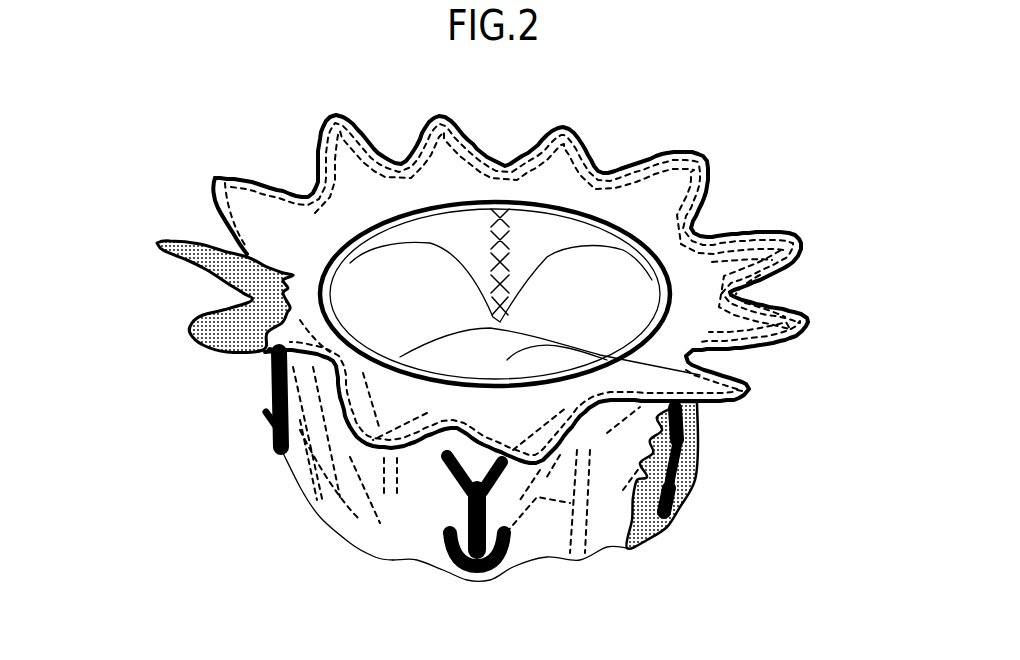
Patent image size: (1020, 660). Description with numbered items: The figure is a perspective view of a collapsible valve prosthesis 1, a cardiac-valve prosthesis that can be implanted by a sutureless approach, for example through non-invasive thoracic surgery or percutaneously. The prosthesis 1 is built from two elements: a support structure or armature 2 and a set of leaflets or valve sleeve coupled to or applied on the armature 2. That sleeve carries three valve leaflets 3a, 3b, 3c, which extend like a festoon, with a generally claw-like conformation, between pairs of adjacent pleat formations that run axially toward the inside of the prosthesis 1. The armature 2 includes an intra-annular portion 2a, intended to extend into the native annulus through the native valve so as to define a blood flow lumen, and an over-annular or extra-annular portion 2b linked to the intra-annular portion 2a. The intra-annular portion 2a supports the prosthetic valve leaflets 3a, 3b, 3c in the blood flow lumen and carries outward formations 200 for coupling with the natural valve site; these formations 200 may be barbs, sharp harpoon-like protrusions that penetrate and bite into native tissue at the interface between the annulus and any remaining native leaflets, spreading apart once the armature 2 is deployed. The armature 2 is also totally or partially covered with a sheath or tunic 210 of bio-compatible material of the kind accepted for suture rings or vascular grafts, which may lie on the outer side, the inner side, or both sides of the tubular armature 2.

The collapsible valve prosthesis 1 is at (727, 153).
The armature 2 is at (321, 178).
The intra-annular portion 2a is at (633, 560).
The over-annular portion 2b is at (805, 232).
The valve leaflet 3a is at (547, 310).
The valve leaflet 3b is at (747, 383).
The valve leaflet 3c is at (370, 300).
The outward formations 200 is at (268, 432).
The sheath or tunic 210 is at (203, 257).